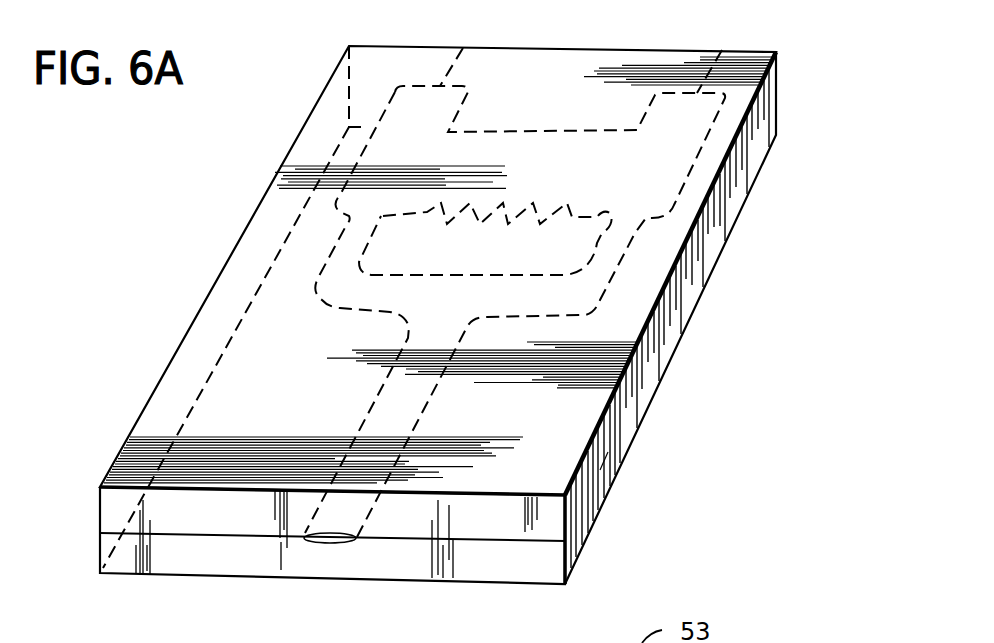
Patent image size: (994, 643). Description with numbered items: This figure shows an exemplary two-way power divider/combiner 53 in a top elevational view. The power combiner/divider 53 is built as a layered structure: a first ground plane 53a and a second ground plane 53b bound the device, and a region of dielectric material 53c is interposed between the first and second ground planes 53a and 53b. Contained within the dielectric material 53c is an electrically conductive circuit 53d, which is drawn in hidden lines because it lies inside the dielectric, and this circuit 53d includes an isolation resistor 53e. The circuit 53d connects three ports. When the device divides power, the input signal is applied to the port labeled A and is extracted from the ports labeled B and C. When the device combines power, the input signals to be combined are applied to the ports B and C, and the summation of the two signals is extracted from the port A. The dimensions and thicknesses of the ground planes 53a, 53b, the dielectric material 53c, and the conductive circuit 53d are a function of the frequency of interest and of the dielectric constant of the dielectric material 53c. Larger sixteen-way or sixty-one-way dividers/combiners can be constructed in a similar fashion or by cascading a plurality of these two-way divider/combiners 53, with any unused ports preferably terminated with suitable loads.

The 2-way power divider/combiner 53 is at (795, 114).
The first ground plane 53a is at (563, 63).
The second ground plane 53b is at (520, 584).
The dielectric material 53c is at (597, 460).
The electrically conductive circuit 53d is at (595, 298).
The isolation resistor 53e is at (500, 207).
The port A is at (330, 543).
The port B is at (467, 44).
The port C is at (725, 45).